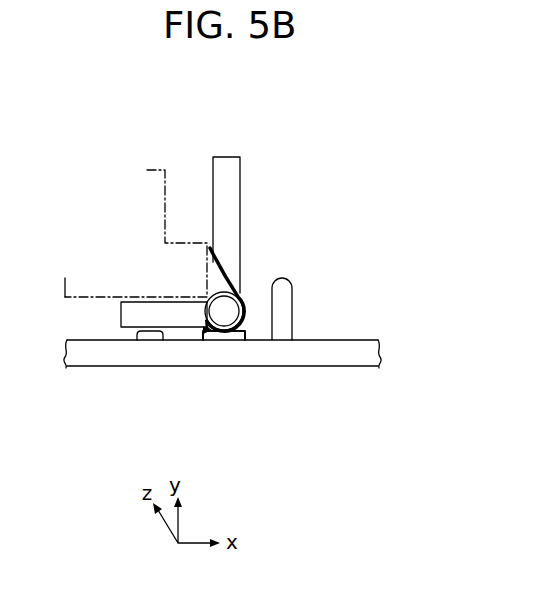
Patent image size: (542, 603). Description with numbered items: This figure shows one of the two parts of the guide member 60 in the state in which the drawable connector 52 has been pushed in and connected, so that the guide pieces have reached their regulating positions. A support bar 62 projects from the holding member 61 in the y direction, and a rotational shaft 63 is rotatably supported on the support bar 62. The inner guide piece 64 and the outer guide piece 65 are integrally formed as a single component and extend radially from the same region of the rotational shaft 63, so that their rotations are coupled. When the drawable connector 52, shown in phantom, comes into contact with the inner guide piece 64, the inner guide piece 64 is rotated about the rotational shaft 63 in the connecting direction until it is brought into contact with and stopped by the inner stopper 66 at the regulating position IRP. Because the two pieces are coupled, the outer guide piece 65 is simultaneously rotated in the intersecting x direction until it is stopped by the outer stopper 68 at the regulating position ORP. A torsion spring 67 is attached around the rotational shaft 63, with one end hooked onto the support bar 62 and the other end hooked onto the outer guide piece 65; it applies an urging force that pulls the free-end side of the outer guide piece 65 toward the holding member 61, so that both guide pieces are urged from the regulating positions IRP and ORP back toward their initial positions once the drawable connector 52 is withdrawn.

The drawable connector 52 is at (167, 192).
The guide member 60 is at (245, 192).
The holding member 61 is at (87, 357).
The support bar 62 is at (246, 328).
The rotational shaft 63 is at (220, 312).
The inner guide piece 64 is at (133, 305).
The outer guide piece 65 is at (230, 165).
The inner stopper 66 is at (136, 337).
The torsion spring 67 is at (216, 254).
The outer stopper 68 is at (282, 313).
The regulating position of outer guide piece ORP is at (219, 157).
The regulating position of inner guide piece IRP is at (120, 313).